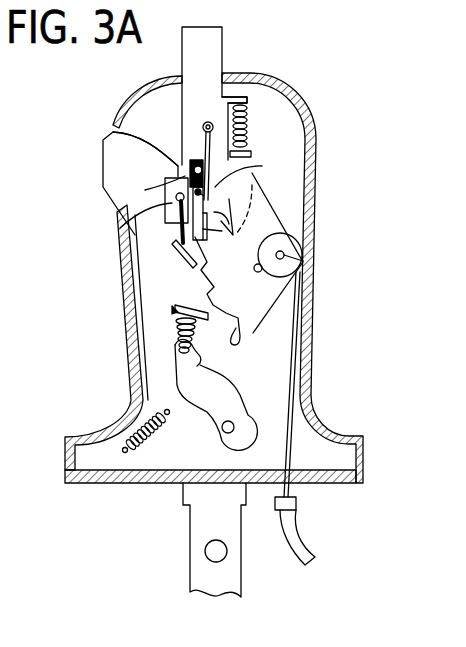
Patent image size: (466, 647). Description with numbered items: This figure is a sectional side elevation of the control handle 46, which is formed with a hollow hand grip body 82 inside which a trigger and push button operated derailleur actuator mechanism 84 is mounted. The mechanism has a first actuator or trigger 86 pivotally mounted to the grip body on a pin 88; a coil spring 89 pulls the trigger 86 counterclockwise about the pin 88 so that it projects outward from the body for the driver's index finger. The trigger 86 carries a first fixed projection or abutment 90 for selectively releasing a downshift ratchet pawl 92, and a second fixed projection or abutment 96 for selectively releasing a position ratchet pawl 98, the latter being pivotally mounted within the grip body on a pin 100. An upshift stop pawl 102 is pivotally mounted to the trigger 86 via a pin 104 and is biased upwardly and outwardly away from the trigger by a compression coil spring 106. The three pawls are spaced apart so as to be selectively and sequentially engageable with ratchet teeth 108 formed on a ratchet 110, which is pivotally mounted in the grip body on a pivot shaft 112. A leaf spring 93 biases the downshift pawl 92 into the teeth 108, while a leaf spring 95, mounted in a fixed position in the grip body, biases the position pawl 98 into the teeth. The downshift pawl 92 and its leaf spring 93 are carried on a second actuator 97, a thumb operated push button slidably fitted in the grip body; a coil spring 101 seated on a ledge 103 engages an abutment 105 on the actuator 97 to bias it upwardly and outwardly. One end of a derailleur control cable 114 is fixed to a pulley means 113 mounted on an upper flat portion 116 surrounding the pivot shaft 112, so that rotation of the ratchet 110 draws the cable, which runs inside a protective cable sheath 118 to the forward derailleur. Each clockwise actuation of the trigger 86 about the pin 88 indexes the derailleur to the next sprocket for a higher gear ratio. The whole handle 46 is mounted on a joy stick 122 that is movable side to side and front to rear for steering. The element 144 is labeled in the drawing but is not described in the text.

The control handle 46 is at (353, 122).
The hand grip body 82 is at (296, 100).
The derailleur actuator mechanism 84 is at (286, 188).
The trigger 86 is at (117, 164).
The pin 88 is at (245, 418).
The coil spring 89 is at (148, 440).
The first fixed projection 90 is at (115, 133).
The downshift ratchet pawl 92 is at (170, 177).
The leaf spring 93 is at (201, 124).
The leaf spring 95 is at (168, 230).
The second fixed projection 96 is at (167, 245).
The second actuator 97 is at (216, 42).
The position ratchet pawl 98 is at (106, 300).
The pin 100 is at (178, 250).
The coil spring 101 is at (248, 130).
The upshift stop pawl 102 is at (173, 338).
The ledge 103 is at (266, 147).
The pin 104 is at (173, 310).
The abutment 105 is at (250, 92).
The compression coil spring 106 is at (197, 355).
The ratchet teeth 108 is at (225, 257).
The ratchet 110 is at (256, 298).
The pivot shaft 112 is at (281, 268).
The pulley means 113 is at (305, 278).
The derailleur control cable 114 is at (290, 397).
The upper flat portion 116 is at (273, 218).
The protective cable sheath 118 is at (296, 543).
The joy stick 122 is at (198, 527).
The opening 144 is at (296, 433).